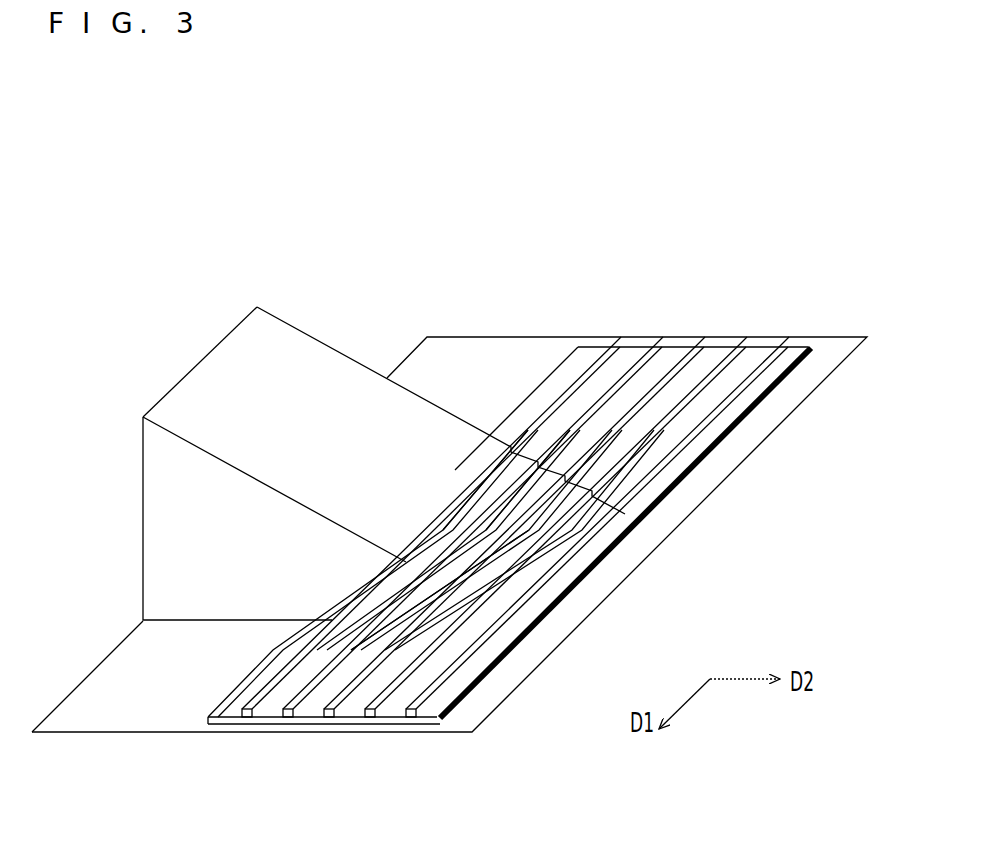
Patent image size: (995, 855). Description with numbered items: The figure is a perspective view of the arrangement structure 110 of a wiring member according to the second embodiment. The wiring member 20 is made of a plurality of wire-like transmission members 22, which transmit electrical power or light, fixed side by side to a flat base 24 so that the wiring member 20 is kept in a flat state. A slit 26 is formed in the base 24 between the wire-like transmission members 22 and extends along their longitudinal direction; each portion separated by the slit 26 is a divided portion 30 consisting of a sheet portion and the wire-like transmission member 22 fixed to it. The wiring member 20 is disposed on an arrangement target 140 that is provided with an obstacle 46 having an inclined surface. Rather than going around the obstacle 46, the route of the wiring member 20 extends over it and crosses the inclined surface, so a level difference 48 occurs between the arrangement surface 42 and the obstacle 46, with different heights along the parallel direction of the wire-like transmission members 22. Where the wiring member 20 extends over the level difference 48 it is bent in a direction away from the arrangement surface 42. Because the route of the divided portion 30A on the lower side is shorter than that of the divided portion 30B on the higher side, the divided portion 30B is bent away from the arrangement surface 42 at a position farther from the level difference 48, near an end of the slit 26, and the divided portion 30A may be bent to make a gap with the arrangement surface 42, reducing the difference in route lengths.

The arrangement structure of the wiring member 110 is at (147, 170).
The arrangement target 140 is at (396, 296).
The obstacle 46 is at (214, 360).
The arrangement surface 42 is at (471, 357).
The level difference 48 is at (458, 417).
The wiring member 20 is at (509, 556).
The base 24 is at (305, 720).
The wire-like transmission members 22 is at (664, 341).
The slit 26 is at (500, 500).
The divided portion 30 is at (509, 532).
The divided portion on the lower-height side 30A is at (588, 572).
The divided portion on the higher-height side 30B is at (440, 540).